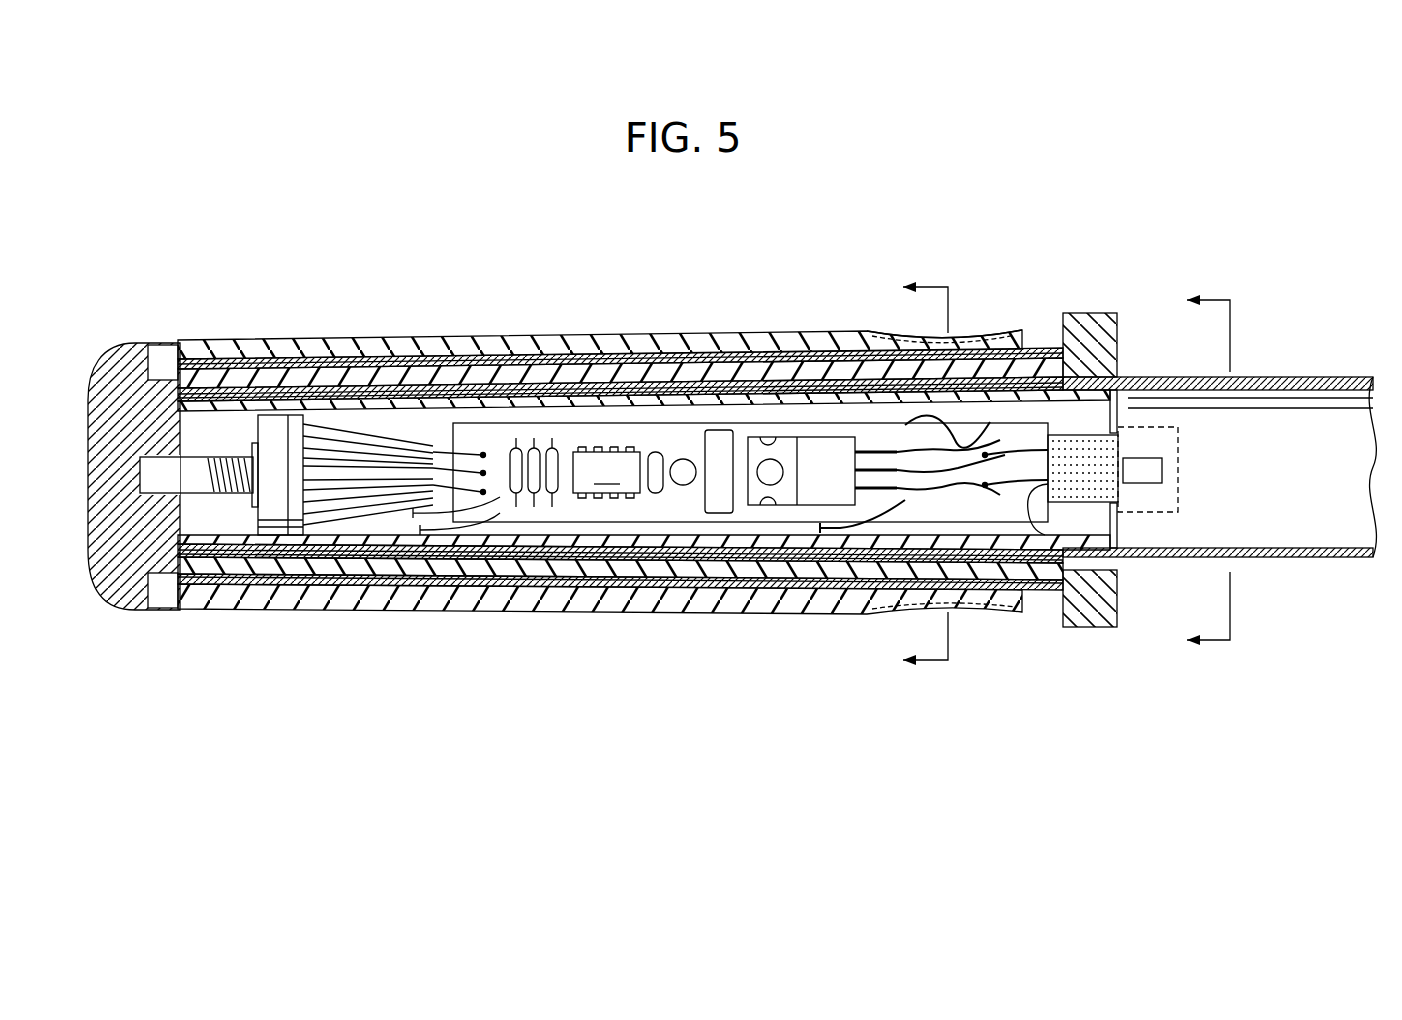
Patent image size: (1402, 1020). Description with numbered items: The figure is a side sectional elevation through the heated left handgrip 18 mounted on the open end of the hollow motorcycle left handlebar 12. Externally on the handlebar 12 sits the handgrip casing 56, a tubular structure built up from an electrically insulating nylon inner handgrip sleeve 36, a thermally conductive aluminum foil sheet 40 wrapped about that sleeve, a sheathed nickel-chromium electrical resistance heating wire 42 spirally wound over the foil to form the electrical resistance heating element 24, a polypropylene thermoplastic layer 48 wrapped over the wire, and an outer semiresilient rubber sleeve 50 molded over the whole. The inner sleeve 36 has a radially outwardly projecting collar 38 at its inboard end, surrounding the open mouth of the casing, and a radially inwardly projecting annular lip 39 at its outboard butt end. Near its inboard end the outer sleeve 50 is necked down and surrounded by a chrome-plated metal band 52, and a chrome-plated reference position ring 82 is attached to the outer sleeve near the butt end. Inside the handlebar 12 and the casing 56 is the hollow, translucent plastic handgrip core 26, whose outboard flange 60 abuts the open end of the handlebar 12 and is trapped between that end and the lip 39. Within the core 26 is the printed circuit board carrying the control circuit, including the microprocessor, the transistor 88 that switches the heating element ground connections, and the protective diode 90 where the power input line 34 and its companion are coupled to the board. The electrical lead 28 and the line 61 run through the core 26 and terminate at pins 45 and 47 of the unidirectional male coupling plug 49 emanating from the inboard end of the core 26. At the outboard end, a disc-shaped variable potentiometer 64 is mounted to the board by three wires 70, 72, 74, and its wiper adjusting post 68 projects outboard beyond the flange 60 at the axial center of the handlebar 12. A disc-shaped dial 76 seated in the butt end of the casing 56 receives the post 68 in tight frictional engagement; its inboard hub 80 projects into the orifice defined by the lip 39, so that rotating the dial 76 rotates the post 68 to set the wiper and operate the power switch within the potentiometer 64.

The left handlebar 12 is at (1276, 378).
The left handgrip 18 is at (705, 502).
The electrical resistance heating element 24 is at (500, 600).
The handgrip core 26 is at (1133, 530).
The electrical lead 28 is at (908, 424).
The power input line 34 is at (333, 515).
The inner handgrip sleeve 36 is at (684, 565).
The collar 38 is at (1120, 587).
The annular lip 39 is at (163, 407).
The aluminum foil sheet 40 is at (564, 578).
The electrical resistance heating wire 42 is at (531, 357).
The pin 45 is at (1182, 442).
The pin 47 is at (1165, 497).
The thermoplastic layer 48 is at (591, 366).
The male coupling plug 49 is at (1192, 466).
The outer sleeve 50 is at (438, 340).
The metal band 52 is at (962, 338).
The handgrip casing 56 is at (657, 324).
The flange 60 is at (183, 370).
The line 61 is at (1037, 502).
The variable potentiometer 64 is at (272, 425).
The wiper adjusting post 68 is at (185, 462).
The wire 70 is at (386, 487).
The wire 72 is at (345, 455).
The wire 74 is at (390, 470).
The dial 76 is at (164, 475).
The inboard hub 80 is at (177, 512).
The reference position ring 82 is at (158, 342).
The transistor 88 is at (815, 486).
The protective diode 90 is at (992, 440).